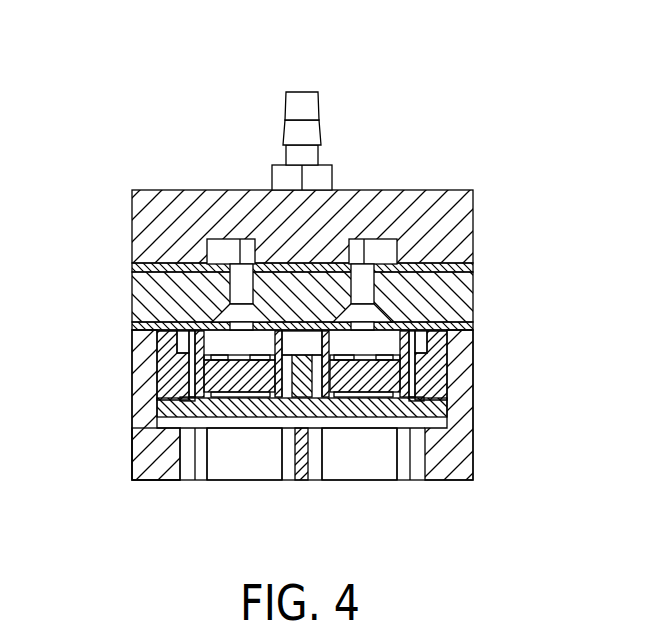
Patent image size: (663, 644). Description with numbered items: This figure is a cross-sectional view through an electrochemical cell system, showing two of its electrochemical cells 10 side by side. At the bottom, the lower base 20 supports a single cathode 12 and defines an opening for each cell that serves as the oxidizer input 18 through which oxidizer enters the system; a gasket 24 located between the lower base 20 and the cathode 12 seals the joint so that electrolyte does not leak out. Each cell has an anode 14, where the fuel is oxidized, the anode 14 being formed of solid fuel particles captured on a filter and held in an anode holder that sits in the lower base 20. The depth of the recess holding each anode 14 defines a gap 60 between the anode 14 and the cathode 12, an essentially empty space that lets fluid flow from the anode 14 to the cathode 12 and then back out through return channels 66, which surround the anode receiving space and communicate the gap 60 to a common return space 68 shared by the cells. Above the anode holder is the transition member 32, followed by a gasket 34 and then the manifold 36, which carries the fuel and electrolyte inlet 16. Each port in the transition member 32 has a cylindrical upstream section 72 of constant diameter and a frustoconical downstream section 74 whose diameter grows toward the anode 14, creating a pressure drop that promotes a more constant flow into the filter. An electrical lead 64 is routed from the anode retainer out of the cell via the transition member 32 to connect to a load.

The electrochemical cell 10 is at (250, 452).
The cathode 12 is at (443, 410).
The anode 14 is at (395, 373).
The fuel and electrolyte inlet 16 is at (303, 92).
The oxidizer input 18 is at (262, 468).
The lower base 20 is at (468, 457).
The gasket 24 is at (175, 428).
The transition member 32 is at (132, 291).
The gasket 34 is at (132, 265).
The manifold 36 is at (158, 190).
The gap 60 is at (415, 402).
The electrical lead 64 is at (238, 305).
The return channels 66 is at (190, 365).
The return space 68 is at (298, 342).
The upstream section 72 is at (366, 298).
The downstream section 74 is at (378, 314).